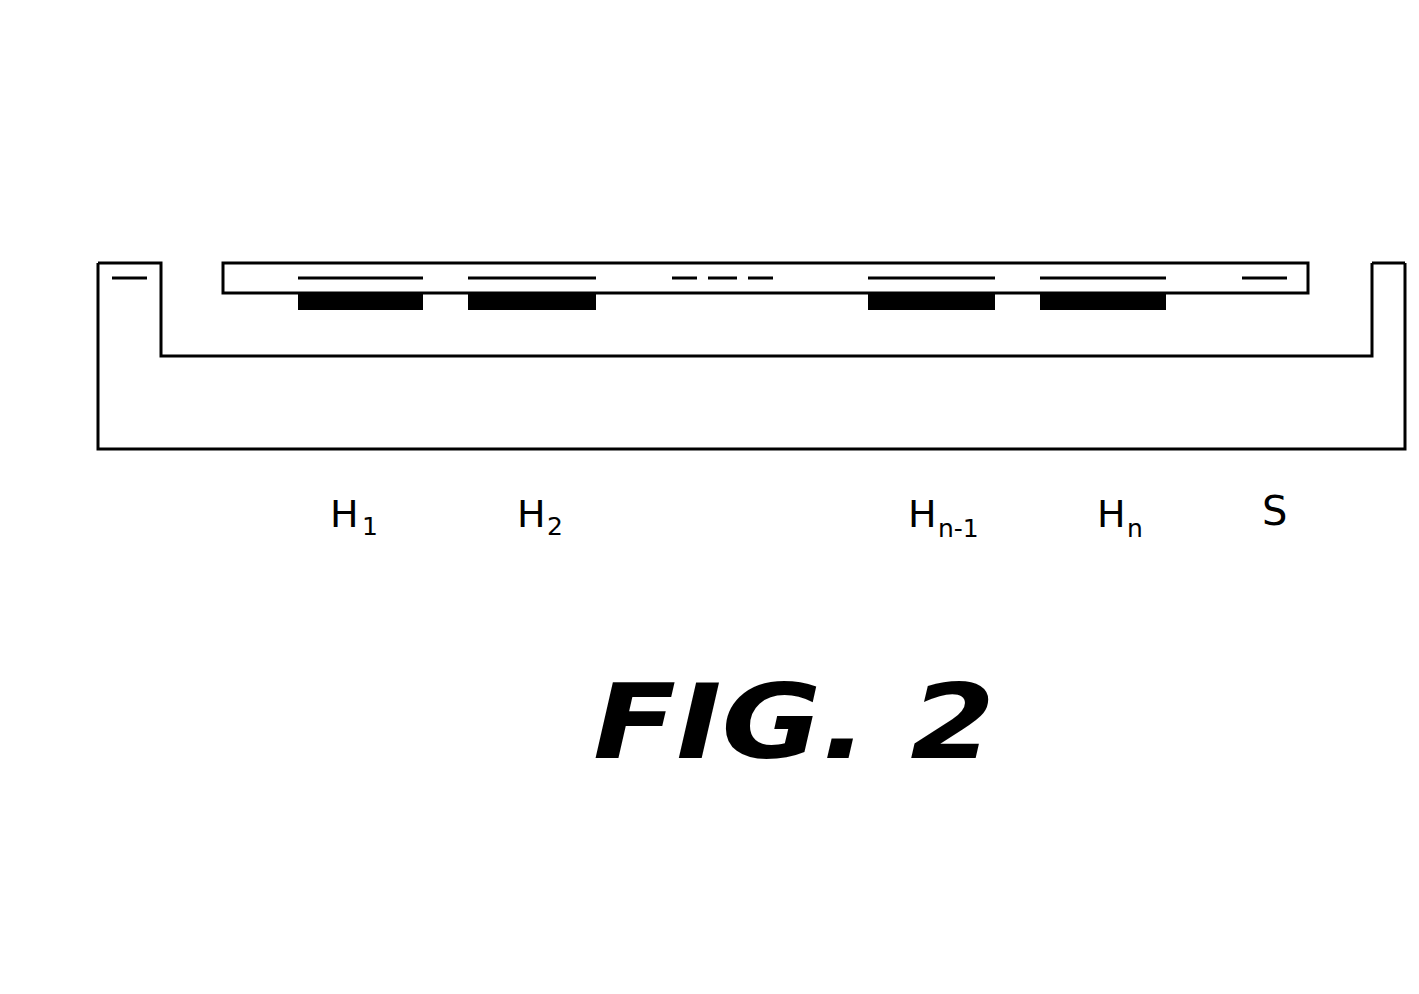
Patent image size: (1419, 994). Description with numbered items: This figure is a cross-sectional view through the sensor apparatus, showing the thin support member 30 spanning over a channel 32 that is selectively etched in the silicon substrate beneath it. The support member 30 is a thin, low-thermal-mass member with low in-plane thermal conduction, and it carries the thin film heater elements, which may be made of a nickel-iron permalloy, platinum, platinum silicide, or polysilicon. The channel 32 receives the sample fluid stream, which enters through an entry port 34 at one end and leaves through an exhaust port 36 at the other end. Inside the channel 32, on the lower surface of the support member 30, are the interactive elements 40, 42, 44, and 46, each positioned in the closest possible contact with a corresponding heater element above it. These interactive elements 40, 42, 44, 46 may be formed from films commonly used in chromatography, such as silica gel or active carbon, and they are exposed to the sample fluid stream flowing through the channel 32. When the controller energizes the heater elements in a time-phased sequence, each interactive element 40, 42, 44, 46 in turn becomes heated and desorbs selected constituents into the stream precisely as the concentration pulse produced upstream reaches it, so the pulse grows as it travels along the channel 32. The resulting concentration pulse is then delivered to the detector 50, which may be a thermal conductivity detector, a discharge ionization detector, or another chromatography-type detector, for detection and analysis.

The support member 30 is at (260, 263).
The channel 32 is at (1253, 327).
The entry port 34 is at (202, 286).
The exhaust port 36 is at (1354, 277).
The interactive element 40 is at (408, 310).
The interactive element 42 is at (565, 310).
The interactive element 44 is at (935, 310).
The interactive element 46 is at (1138, 310).
The detector 50 is at (1270, 278).